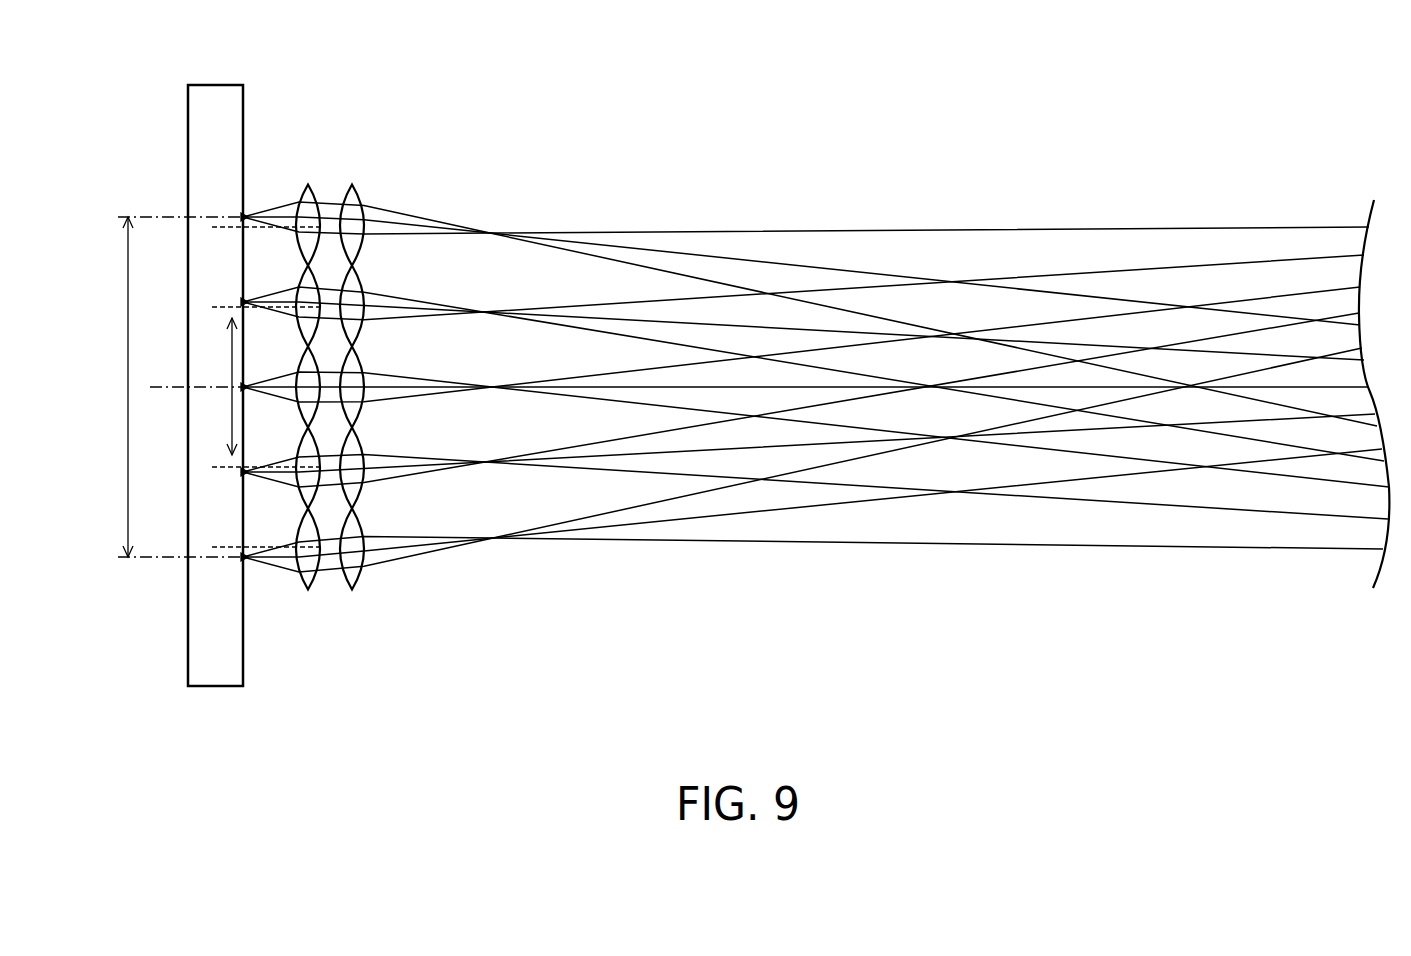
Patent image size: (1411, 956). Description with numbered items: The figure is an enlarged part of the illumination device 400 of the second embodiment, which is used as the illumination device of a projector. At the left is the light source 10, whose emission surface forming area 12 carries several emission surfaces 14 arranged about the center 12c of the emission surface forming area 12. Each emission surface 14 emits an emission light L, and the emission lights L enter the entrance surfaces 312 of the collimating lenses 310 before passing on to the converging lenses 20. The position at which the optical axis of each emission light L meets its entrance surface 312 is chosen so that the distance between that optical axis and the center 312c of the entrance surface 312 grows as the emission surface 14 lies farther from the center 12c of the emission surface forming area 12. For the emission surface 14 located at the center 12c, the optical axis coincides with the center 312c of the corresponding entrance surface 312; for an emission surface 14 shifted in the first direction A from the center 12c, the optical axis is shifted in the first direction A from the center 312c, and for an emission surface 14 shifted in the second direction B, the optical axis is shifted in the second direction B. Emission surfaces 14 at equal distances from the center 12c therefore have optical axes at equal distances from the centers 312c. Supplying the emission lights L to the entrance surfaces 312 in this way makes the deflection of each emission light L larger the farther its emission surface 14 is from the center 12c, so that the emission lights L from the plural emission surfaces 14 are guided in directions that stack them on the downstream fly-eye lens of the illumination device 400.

The light source 10 is at (215, 97).
The emission surface forming area 12 is at (165, 387).
The center of the emission surface forming area 12c is at (166, 395).
The emission surface 14 is at (243, 217).
The converging lenses 20 is at (352, 185).
The collimating lenses 310 is at (317, 340).
The entrance surface 312 is at (290, 193).
The center of the entrance surface 312c is at (263, 230).
The illumination device 400 is at (1325, 90).
The first direction A is at (223, 352).
The second direction B is at (223, 421).
The emission light L is at (279, 608).